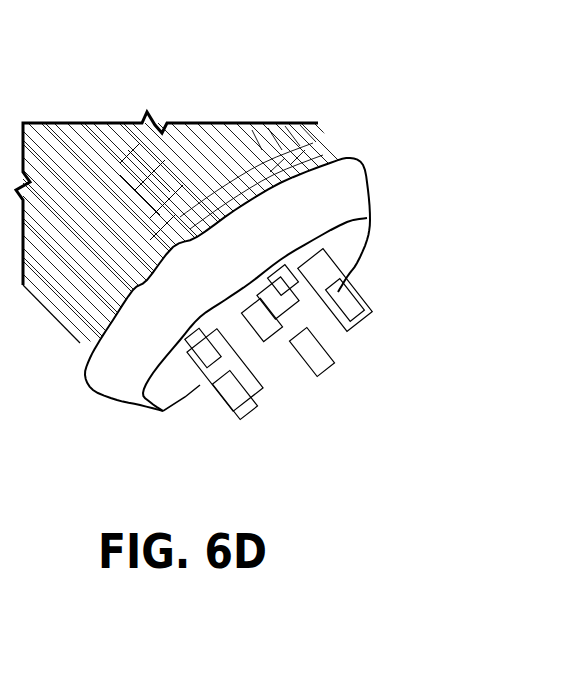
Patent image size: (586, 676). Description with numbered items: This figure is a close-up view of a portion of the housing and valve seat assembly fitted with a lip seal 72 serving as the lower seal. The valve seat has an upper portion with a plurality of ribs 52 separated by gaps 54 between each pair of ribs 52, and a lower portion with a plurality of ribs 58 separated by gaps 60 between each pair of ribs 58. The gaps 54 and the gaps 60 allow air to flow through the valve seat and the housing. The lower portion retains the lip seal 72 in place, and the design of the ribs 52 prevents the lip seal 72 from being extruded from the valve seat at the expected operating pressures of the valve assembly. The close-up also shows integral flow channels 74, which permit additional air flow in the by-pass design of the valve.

The ribs 52 is at (93, 137).
The gaps 54 is at (140, 229).
The lip seal 72 is at (343, 167).
The ribs 58 is at (363, 298).
The gaps 60 is at (278, 381).
The integral flow channels 74 is at (224, 350).